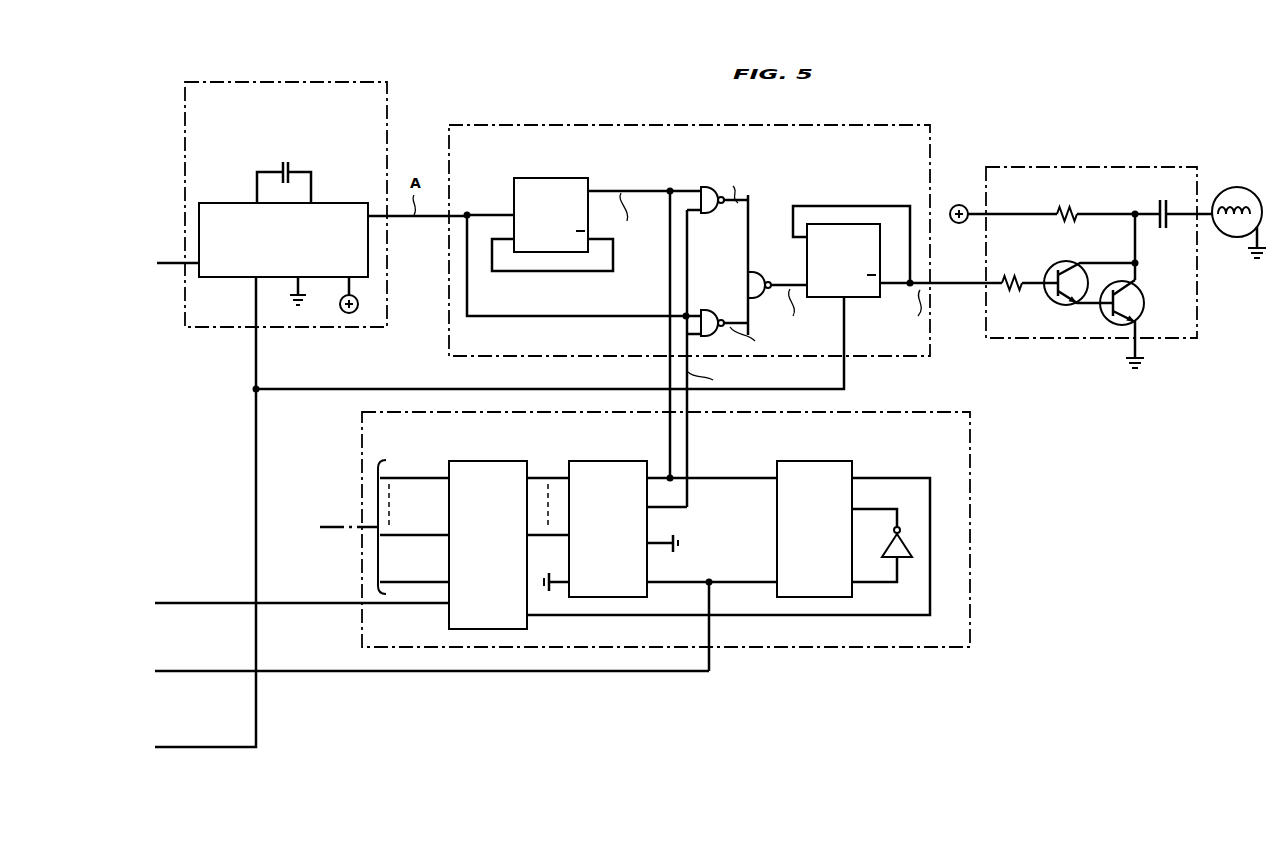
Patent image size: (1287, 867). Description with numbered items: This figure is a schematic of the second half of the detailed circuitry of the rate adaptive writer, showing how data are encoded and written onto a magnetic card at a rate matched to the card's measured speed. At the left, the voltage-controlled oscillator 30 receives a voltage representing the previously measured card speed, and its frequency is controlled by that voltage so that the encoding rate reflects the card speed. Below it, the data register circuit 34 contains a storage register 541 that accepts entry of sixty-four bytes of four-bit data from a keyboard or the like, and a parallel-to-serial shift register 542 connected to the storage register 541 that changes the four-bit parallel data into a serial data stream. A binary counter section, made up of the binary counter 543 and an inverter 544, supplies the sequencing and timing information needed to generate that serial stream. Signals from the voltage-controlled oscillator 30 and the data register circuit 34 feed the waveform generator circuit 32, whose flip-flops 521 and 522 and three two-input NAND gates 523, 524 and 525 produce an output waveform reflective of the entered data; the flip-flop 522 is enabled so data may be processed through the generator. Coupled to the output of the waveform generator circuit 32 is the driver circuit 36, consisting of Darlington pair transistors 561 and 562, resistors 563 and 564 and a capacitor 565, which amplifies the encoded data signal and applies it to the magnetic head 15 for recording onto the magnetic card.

The voltage-controlled oscillator 30 is at (312, 204).
The waveform generator circuit 32 is at (593, 316).
The data register circuit 34 is at (617, 529).
The driver circuit 36 is at (1081, 252).
The magnetic head 15 is at (1245, 204).
The flip-flop 521 is at (548, 192).
The flip-flop 522 is at (852, 285).
The two-input NAND gate 523 is at (717, 212).
The two-input NAND gate 524 is at (717, 314).
The two-input NAND gate 525 is at (777, 276).
The storage register 541 is at (449, 619).
The parallel-to-serial shift register 542 is at (606, 470).
The binary counter 543 is at (813, 472).
The inverter 544 is at (886, 542).
The transistor 561 is at (1087, 292).
The transistor 562 is at (1136, 324).
The resistor 563 is at (1027, 275).
The resistor 564 is at (1072, 223).
The capacitor 565 is at (1166, 207).